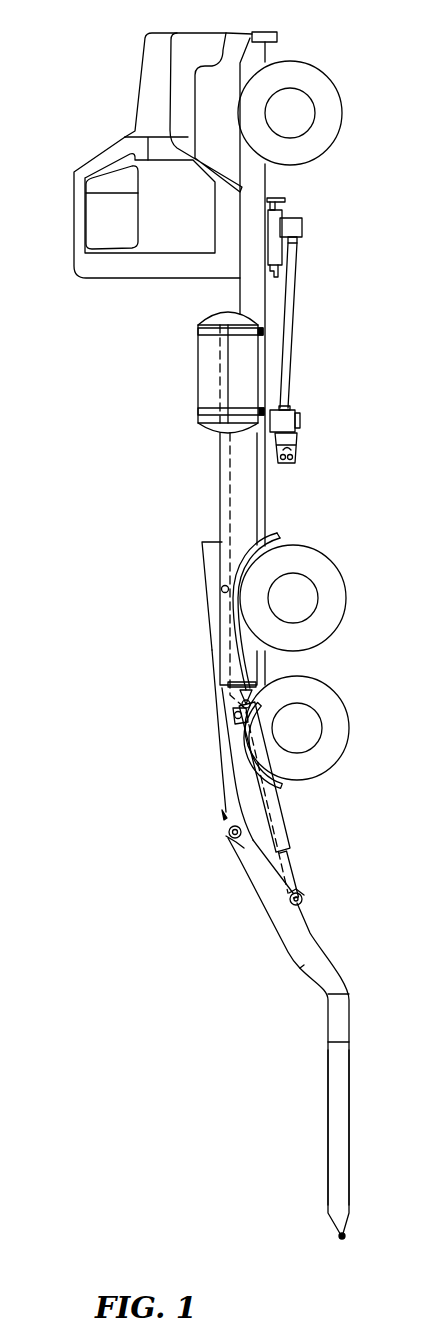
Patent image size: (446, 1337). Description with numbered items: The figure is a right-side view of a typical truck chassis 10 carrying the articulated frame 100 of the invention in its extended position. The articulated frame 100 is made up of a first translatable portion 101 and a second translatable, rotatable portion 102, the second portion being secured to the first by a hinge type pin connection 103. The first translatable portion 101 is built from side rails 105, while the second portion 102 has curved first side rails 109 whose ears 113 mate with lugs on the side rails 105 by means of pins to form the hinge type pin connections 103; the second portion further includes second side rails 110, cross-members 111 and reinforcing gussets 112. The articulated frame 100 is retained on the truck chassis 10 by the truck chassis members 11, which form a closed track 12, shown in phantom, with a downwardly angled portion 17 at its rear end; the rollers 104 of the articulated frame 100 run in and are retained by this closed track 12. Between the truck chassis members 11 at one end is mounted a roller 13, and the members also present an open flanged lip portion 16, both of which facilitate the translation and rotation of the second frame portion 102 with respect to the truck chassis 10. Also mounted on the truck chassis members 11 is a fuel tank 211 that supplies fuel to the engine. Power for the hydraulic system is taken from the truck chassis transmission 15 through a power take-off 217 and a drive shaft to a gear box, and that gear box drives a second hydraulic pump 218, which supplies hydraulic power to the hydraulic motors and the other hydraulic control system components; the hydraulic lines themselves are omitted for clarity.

The truck chassis 10 is at (192, 471).
The truck chassis members 11 is at (242, 458).
The closed track 12 is at (228, 487).
The roller 13 is at (303, 899).
The truck chassis transmission 15 is at (273, 233).
The open flanged lip portion 16 is at (266, 857).
The downwardly angled portion 17 is at (250, 702).
The articulated frame 100 is at (270, 886).
The first translatable portion 101 is at (208, 627).
The second translatable, rotatable portion 102 is at (328, 1093).
The hinge type pin connection 103 is at (229, 833).
The rollers 104 is at (222, 590).
The side rails 105 is at (210, 548).
The curved first side rails 109 is at (327, 958).
The second side rails 110 is at (342, 1133).
The cross-members 111 is at (347, 1235).
The reinforcing gussets 112 is at (343, 1015).
The ears 113 is at (236, 843).
The fuel tank 211 is at (208, 357).
The power take-off 217 is at (302, 230).
The second hydraulic pump 218 is at (297, 450).